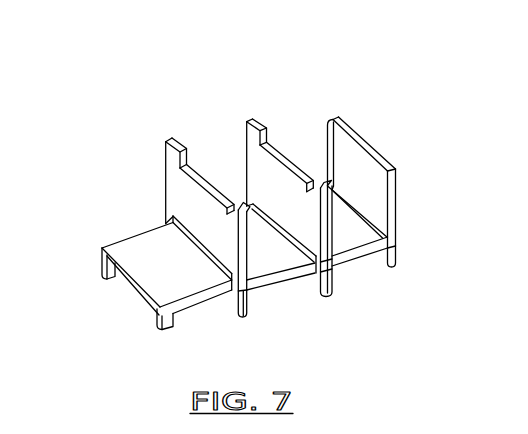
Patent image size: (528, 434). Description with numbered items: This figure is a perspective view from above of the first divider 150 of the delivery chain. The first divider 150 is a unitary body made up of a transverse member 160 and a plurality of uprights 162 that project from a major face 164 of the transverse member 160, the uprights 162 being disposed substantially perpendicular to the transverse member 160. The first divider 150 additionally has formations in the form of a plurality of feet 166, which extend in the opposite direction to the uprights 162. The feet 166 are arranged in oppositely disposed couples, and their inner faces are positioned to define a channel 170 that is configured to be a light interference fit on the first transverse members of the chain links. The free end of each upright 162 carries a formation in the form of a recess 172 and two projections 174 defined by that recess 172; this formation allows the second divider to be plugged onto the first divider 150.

The first divider 150 is at (262, 226).
The transverse member 160 is at (194, 305).
The uprights 162 is at (262, 161).
The major face 164 is at (140, 250).
The feet 166 is at (253, 305).
The channel 170 is at (127, 294).
The recess 172 is at (202, 188).
The projections 174 is at (178, 142).